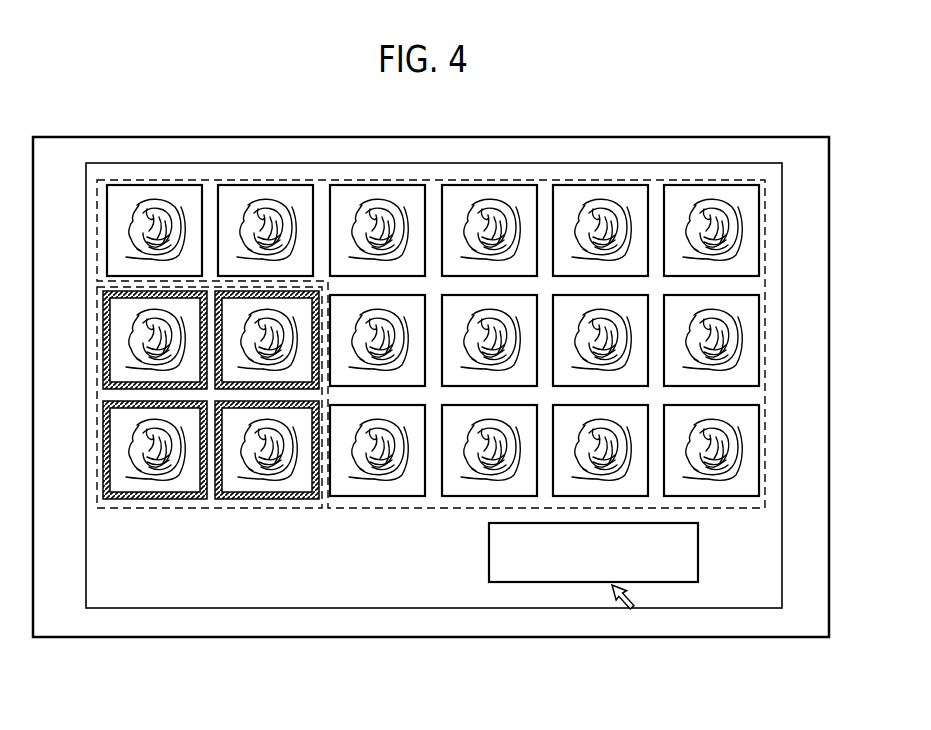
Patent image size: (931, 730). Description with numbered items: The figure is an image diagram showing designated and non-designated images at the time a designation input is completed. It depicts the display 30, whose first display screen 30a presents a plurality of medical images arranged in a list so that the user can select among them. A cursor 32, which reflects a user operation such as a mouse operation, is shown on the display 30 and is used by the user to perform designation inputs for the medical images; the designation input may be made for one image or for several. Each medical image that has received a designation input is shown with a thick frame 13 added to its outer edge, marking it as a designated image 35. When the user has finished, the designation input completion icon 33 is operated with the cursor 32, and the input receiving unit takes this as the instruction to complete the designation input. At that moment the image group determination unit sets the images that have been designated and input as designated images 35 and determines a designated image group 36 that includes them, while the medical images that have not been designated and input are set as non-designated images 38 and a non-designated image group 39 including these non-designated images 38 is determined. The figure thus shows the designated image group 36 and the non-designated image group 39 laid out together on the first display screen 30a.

The display 30 is at (60, 638).
The first display screen 30a is at (307, 163).
The thick frame 13 is at (193, 500).
The designated image 35 is at (153, 485).
The designated image group 36 is at (263, 509).
The non-designated image 38 is at (382, 487).
The non-designated image group 39 is at (455, 510).
The designation input completion icon 33 is at (698, 547).
The cursor 32 is at (633, 600).